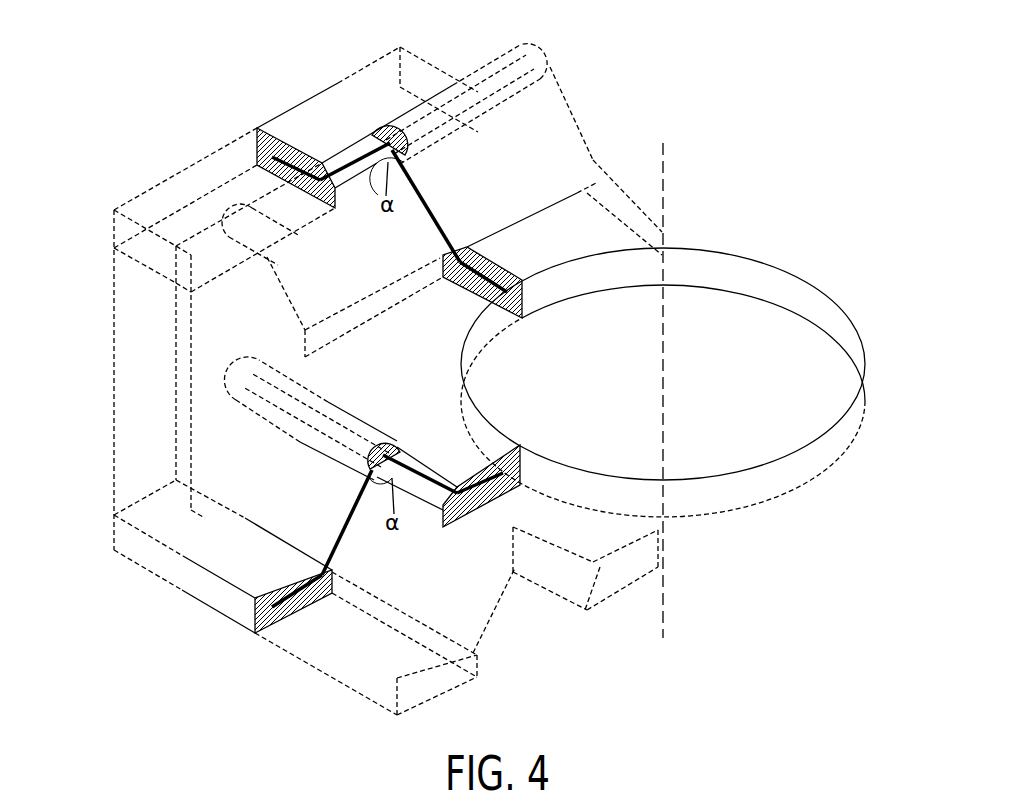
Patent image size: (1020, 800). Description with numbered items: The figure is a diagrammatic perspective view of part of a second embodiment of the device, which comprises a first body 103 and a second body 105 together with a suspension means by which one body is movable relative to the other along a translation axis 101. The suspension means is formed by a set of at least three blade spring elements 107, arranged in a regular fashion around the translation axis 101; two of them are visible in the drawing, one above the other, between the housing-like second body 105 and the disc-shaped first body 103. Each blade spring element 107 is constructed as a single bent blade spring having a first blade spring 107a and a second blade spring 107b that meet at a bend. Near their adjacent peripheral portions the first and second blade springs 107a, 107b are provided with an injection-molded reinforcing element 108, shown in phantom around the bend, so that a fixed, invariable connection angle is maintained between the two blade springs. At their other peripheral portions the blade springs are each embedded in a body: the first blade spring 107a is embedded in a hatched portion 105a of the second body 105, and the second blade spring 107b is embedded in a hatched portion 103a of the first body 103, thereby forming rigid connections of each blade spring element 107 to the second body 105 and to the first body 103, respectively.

The translation axis 101 is at (667, 150).
The first body 103 is at (731, 265).
The portion of the first body 103a is at (463, 290).
The second body 105 is at (125, 367).
The portion of the second body 105a is at (257, 147).
The blade spring element 107 is at (389, 312).
The first blade spring 107a is at (348, 163).
The second blade spring 107b is at (423, 188).
The injection-molded reinforcing element 108 is at (487, 68).